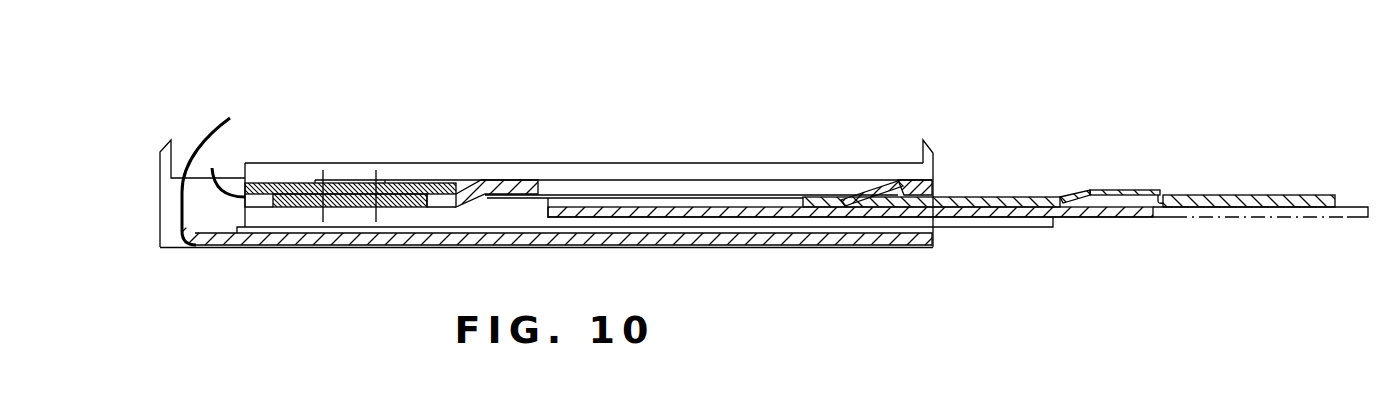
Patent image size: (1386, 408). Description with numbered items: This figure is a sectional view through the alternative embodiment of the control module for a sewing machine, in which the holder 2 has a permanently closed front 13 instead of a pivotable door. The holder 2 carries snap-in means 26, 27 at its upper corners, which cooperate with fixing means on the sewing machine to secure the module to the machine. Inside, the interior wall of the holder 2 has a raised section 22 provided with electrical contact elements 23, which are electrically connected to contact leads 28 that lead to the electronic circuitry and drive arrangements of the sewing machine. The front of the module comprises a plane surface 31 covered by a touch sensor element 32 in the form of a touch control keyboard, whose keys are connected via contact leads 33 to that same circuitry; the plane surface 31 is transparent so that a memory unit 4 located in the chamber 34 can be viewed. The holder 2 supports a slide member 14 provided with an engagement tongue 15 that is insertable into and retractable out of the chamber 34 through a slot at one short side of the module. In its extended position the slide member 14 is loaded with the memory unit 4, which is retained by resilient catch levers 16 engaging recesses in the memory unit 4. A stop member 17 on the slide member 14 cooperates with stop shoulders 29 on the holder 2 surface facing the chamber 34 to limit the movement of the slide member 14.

The holder 2 is at (665, 163).
The memory unit 4 is at (1100, 217).
The permanently closed front 13 is at (656, 236).
The slide member 14 is at (975, 197).
The engagement tongue 15 is at (1263, 195).
The catch levers 16 is at (1160, 190).
The stop member 17 is at (866, 186).
The raised section 22 is at (354, 192).
The electrical contact elements 23 is at (326, 213).
The snap-in means 26 is at (933, 152).
The snap-in means 27 is at (160, 152).
The contact leads 28 is at (212, 170).
The stop shoulders 29 is at (896, 182).
The plane surface 31 is at (577, 248).
The touch sensor element 32 is at (745, 233).
The contact leads 33 is at (217, 123).
The chamber 34 is at (507, 216).